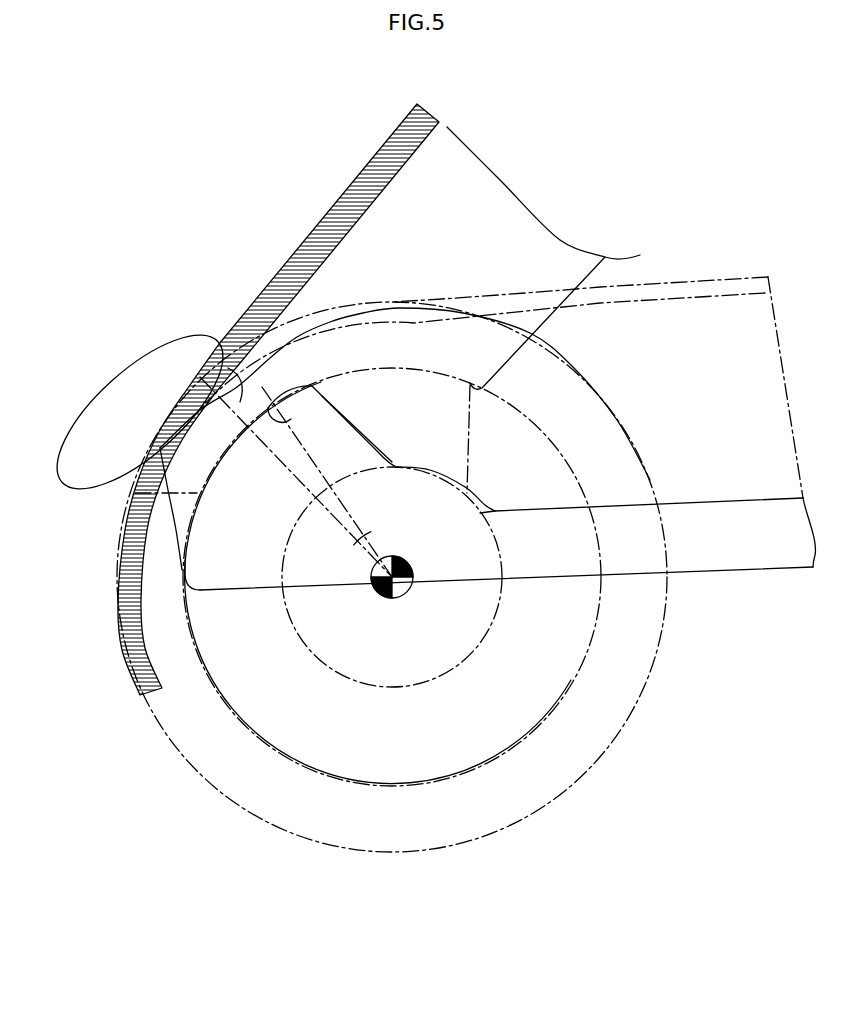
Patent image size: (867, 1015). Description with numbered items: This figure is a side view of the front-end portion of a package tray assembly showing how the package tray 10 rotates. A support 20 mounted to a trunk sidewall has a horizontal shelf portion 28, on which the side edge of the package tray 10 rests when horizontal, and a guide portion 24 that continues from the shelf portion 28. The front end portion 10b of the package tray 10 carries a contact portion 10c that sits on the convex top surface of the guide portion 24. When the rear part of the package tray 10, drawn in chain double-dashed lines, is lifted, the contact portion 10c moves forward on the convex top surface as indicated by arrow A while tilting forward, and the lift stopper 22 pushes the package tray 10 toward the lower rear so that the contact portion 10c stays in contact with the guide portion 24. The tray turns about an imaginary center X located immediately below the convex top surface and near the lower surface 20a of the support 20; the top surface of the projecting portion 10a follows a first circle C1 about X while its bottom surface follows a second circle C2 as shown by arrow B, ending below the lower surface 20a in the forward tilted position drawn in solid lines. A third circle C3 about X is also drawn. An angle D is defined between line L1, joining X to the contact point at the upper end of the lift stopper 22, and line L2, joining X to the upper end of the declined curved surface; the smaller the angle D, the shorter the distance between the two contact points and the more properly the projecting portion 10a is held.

The package tray 10 is at (355, 186).
The projecting portion 10a is at (152, 605).
The front end portion 10b is at (377, 400).
The contact portion 10c is at (397, 467).
The support 20 is at (704, 588).
The lower surface 20a is at (538, 584).
The lift stopper 22 is at (118, 395).
The guide portion 24 is at (335, 565).
The shelf portion 28 is at (773, 548).
The center of rotation X is at (397, 605).
The first circle C1 is at (505, 832).
The second circle C2 is at (428, 786).
The third circle C3 is at (350, 688).
The line L1 is at (262, 387).
The line L2 is at (262, 387).
The angle D is at (366, 535).
The arrow A is at (395, 446).
The arrow B is at (97, 520).